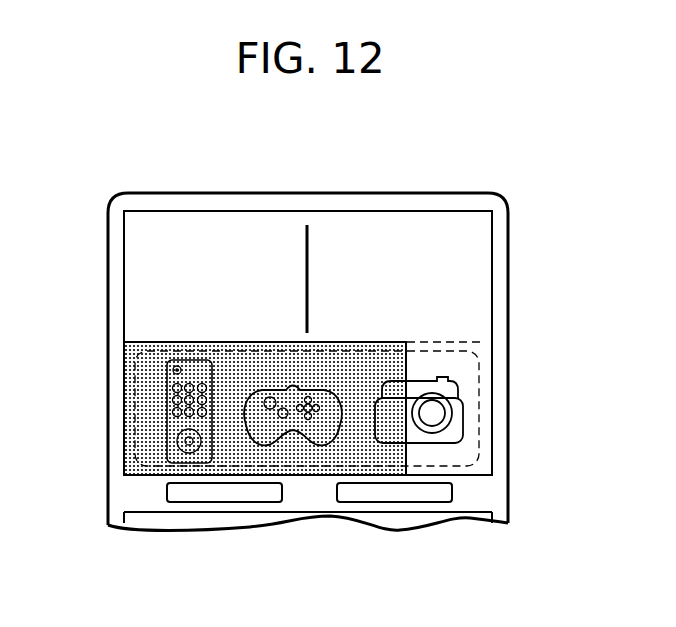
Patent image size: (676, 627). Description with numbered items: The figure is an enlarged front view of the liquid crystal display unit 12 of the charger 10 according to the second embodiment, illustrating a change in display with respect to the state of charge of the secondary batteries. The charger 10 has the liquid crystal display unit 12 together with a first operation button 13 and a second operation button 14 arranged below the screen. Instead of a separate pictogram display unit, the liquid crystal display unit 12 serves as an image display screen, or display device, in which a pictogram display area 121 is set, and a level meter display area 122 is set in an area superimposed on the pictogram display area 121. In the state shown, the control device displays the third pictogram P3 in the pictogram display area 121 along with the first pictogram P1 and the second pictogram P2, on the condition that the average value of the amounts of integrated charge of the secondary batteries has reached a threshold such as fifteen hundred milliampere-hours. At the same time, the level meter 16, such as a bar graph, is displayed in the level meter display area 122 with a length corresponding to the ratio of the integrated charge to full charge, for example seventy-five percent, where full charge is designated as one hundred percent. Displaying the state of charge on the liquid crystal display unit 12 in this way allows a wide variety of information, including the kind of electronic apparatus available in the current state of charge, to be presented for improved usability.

The charger 10 is at (220, 184).
The liquid crystal display unit 12 is at (483, 258).
The first operation button 13 is at (167, 492).
The second operation button 14 is at (452, 492).
The level meter 16 is at (133, 350).
The pictogram display area 121 is at (124, 432).
The level meter display area 122 is at (480, 342).
The first pictogram P1 is at (162, 405).
The second pictogram P2 is at (298, 434).
The third pictogram P3 is at (468, 421).